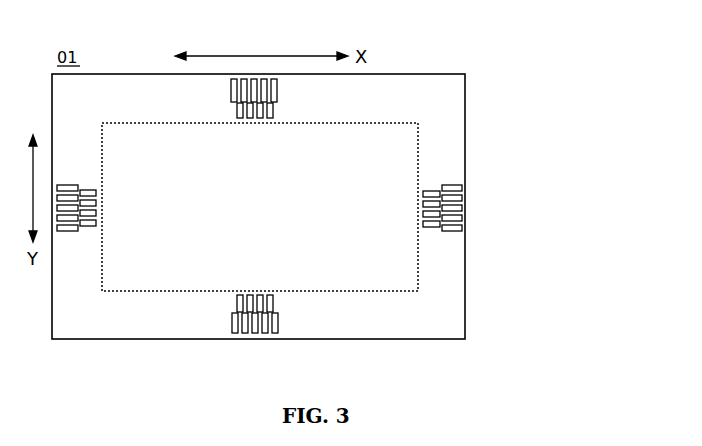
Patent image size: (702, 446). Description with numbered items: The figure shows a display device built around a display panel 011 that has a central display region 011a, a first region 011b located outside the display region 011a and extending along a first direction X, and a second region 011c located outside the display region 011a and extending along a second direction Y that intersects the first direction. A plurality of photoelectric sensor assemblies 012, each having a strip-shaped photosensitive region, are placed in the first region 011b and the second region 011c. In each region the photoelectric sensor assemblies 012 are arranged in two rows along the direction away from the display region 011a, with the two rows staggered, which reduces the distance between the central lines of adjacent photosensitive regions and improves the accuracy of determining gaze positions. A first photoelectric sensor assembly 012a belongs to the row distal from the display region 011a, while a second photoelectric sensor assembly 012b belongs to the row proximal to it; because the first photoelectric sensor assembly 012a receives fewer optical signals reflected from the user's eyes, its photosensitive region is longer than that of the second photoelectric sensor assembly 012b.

The display panel 011 is at (465, 127).
The display region 011a is at (377, 275).
The first region 011b is at (375, 93).
The second region 011c is at (323, 284).
The photoelectric sensor assembly 012 is at (506, 209).
The first photoelectric sensor assembly 012a is at (455, 202).
The second photoelectric sensor assembly 012b is at (457, 221).